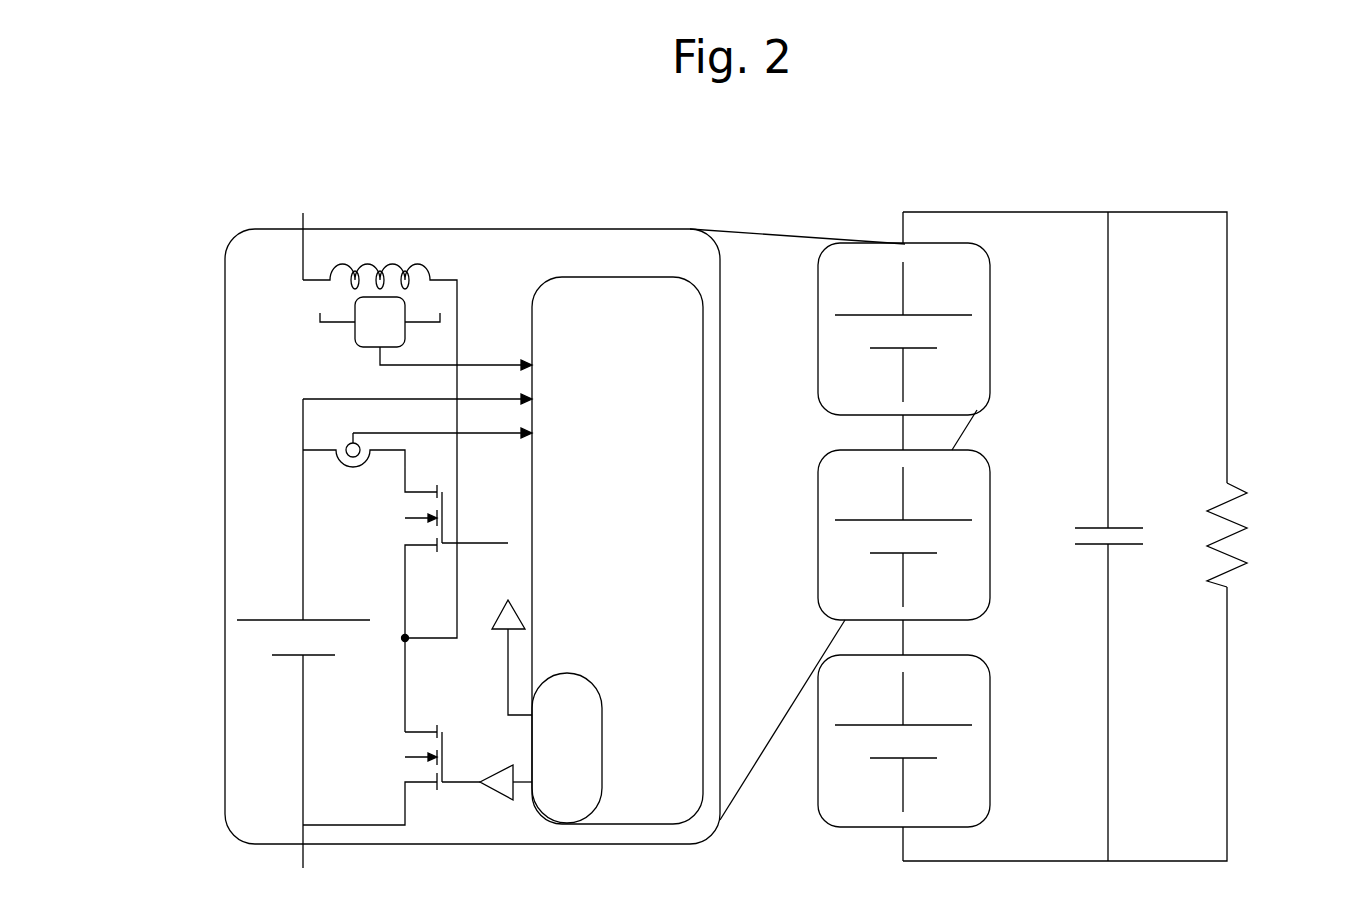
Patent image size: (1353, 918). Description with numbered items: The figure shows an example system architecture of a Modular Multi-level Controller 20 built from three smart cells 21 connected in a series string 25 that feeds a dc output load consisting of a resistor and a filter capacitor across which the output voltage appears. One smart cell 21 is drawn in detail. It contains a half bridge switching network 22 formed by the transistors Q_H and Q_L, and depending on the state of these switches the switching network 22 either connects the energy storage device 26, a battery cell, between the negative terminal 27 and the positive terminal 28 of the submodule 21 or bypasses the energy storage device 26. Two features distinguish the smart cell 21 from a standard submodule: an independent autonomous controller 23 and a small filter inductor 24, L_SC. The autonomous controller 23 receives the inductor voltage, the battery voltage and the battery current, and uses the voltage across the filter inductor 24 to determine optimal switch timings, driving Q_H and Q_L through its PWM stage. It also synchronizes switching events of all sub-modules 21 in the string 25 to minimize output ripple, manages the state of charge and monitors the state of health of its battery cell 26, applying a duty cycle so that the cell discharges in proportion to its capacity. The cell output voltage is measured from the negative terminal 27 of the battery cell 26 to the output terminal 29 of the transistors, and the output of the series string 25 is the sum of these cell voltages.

The Modular Multi-level Controller 20 is at (1120, 188).
The smart cell 21 is at (572, 229).
The half bridge switching network 22 is at (280, 582).
The autonomous controller 23 is at (640, 277).
The filter inductor 24 is at (410, 270).
The string of smart cells 25 is at (870, 210).
The energy storage device 26 is at (273, 657).
The negative terminal 27 is at (307, 855).
The positive terminal 28 is at (303, 213).
The output terminal 29 is at (405, 638).